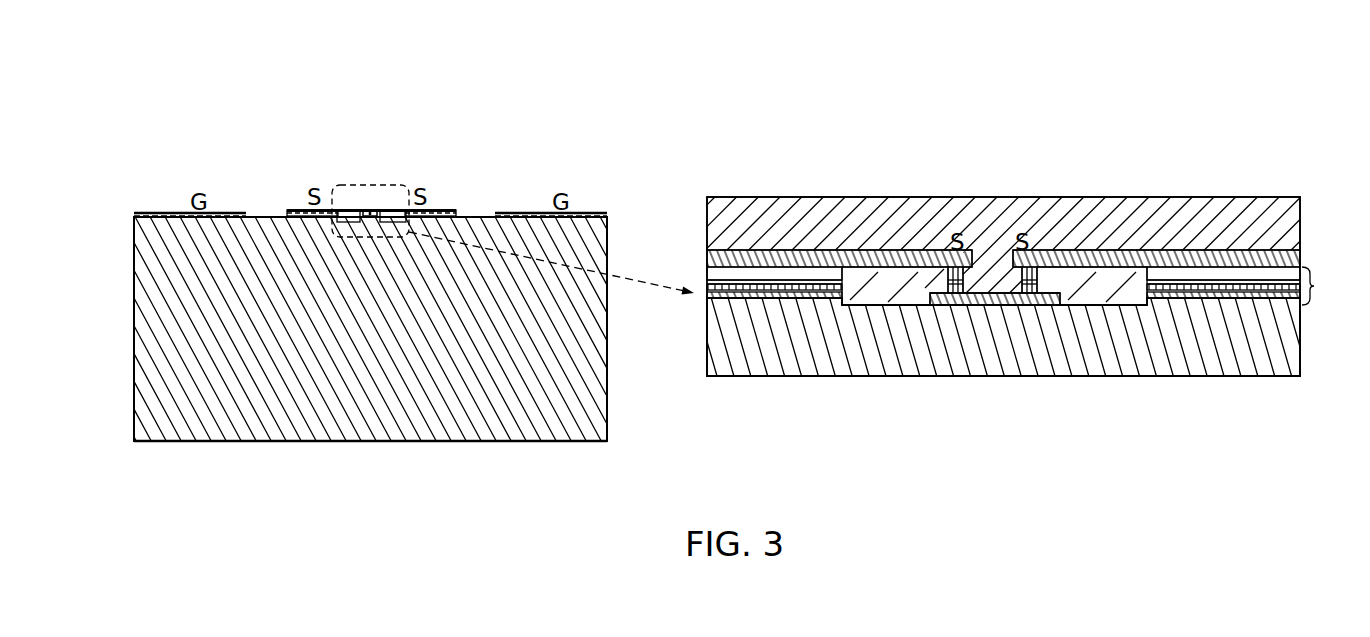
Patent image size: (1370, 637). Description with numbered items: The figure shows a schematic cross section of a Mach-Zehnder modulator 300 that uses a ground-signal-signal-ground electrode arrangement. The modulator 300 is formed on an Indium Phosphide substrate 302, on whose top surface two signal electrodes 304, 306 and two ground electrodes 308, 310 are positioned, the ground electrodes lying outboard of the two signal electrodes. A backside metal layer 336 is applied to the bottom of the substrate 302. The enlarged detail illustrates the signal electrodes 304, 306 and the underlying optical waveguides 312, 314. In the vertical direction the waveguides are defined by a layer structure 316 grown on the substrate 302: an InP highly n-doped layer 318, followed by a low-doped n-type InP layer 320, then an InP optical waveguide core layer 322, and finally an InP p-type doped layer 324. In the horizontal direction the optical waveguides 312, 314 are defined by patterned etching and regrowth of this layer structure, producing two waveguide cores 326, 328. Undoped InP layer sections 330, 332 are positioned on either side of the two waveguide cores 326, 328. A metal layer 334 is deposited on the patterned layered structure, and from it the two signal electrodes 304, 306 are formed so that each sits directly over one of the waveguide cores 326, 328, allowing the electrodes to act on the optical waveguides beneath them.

The Mach-Zehnder modulator 300 is at (164, 69).
The Indium Phosphide substrate 302 is at (580, 398).
The signal electrode 304 is at (300, 210).
The signal electrode 306 is at (443, 210).
The ground electrode 308 is at (168, 212).
The ground electrode 310 is at (522, 212).
The optical waveguide 312 is at (948, 282).
The optical waveguide 314 is at (1037, 285).
The layer structure 316 is at (1329, 286).
The InP highly n-doped layer 318 is at (1172, 298).
The low-doped n-type InP layer 320 is at (1220, 290).
The InP optical waveguide core layer 322 is at (1266, 283).
The InP p-type doped layer 324 is at (955, 267).
The waveguide core 326 is at (957, 294).
The waveguide core 328 is at (1032, 294).
The undoped InP layer section 330 is at (762, 270).
The undoped InP layer section 332 is at (1235, 275).
The metal layer 334 is at (724, 262).
The backside metal layer 336 is at (370, 443).